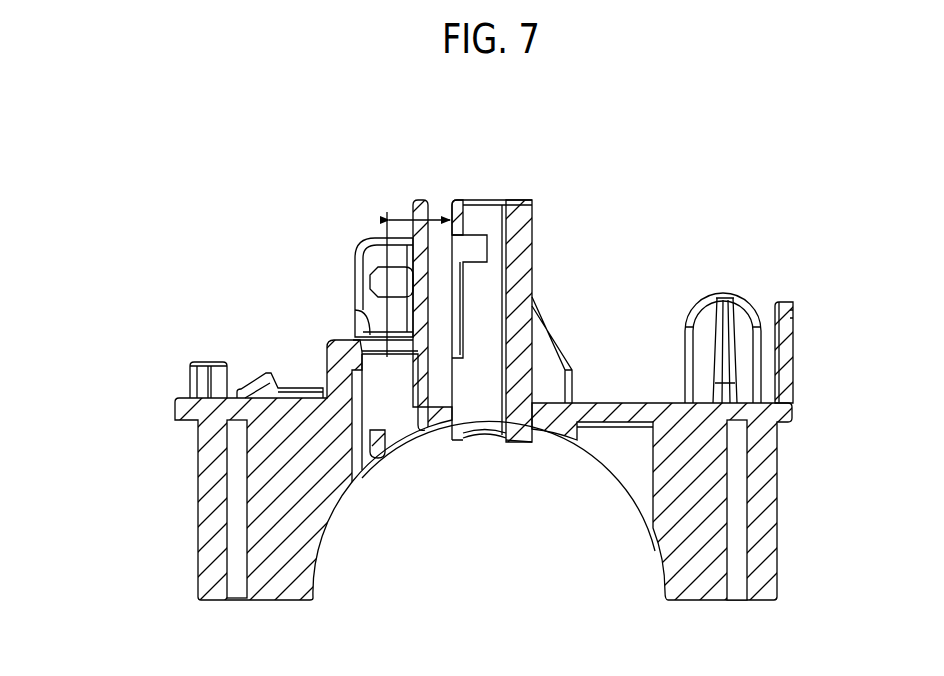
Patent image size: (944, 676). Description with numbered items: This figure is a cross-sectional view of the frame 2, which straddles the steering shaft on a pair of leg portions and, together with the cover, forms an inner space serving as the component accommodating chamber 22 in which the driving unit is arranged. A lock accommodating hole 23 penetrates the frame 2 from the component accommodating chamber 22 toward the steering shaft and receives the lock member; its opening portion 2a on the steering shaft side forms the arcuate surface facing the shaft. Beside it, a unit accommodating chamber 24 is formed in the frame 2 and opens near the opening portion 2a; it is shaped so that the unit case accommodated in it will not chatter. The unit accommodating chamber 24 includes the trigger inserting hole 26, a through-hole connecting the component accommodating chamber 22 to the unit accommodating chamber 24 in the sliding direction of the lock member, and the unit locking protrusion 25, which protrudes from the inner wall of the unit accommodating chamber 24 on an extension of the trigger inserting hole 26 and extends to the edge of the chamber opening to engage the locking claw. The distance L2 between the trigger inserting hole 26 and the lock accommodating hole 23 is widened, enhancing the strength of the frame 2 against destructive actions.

The frame 2 is at (652, 163).
The component accommodating chamber 22 is at (641, 350).
The lock accommodating hole 23 is at (497, 233).
The unit accommodating chamber 24 is at (415, 432).
The unit locking protrusion 25 is at (378, 452).
The trigger inserting hole 26 is at (367, 333).
The opening portion 2a is at (503, 437).
The distance L2 is at (410, 218).